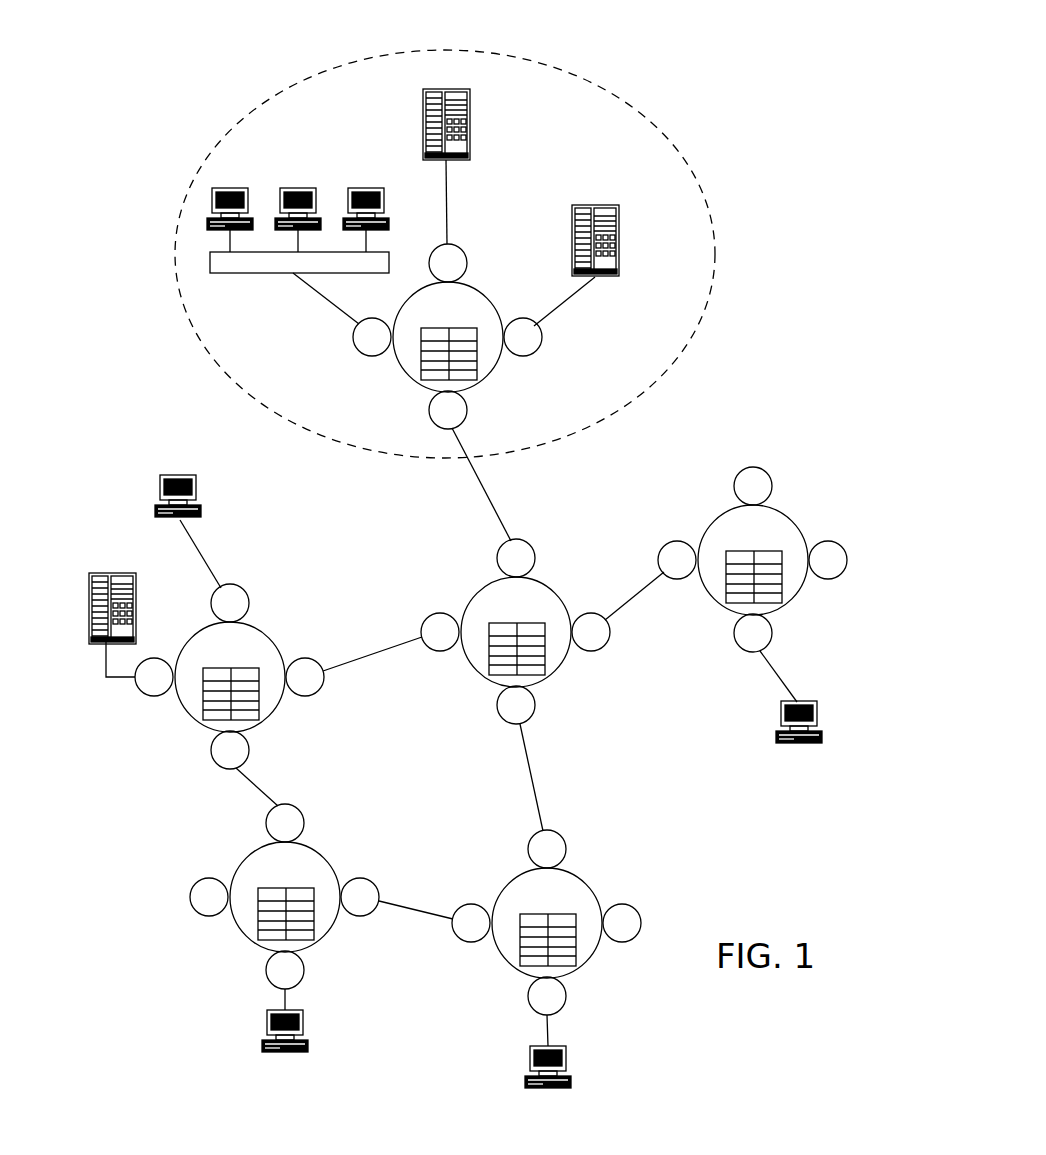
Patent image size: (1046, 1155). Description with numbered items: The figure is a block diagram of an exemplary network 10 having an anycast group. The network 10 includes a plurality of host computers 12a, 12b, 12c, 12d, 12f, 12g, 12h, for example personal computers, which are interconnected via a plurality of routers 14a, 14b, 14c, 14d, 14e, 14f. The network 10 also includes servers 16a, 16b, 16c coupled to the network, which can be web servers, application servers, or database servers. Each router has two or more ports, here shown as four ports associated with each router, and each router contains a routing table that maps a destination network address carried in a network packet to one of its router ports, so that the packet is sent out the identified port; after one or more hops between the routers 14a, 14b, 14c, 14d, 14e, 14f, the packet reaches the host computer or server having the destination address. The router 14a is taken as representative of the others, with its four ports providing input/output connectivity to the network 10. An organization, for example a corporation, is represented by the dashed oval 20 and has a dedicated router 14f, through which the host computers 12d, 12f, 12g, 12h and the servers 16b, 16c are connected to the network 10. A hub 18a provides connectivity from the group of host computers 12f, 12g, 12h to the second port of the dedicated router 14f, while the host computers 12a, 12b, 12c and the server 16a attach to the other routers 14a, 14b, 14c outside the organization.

The network 10 is at (764, 395).
The dashed oval 20 is at (497, 254).
The host computer 12a is at (597, 1062).
The host computer 12b is at (334, 1026).
The host computer 12c is at (229, 492).
The host computer 12d is at (751, 718).
The host computer 12f is at (194, 187).
The host computer 12g is at (248, 160).
The host computer 12h is at (303, 142).
The router 14a is at (564, 913).
The router 14b is at (307, 890).
The router 14c is at (251, 671).
The router 14d is at (775, 548).
The router 14e is at (537, 623).
The dedicated router 14f is at (461, 336).
The server 16a is at (84, 577).
The server 16b is at (486, 91).
The server 16c is at (666, 210).
The hub 18a is at (250, 247).